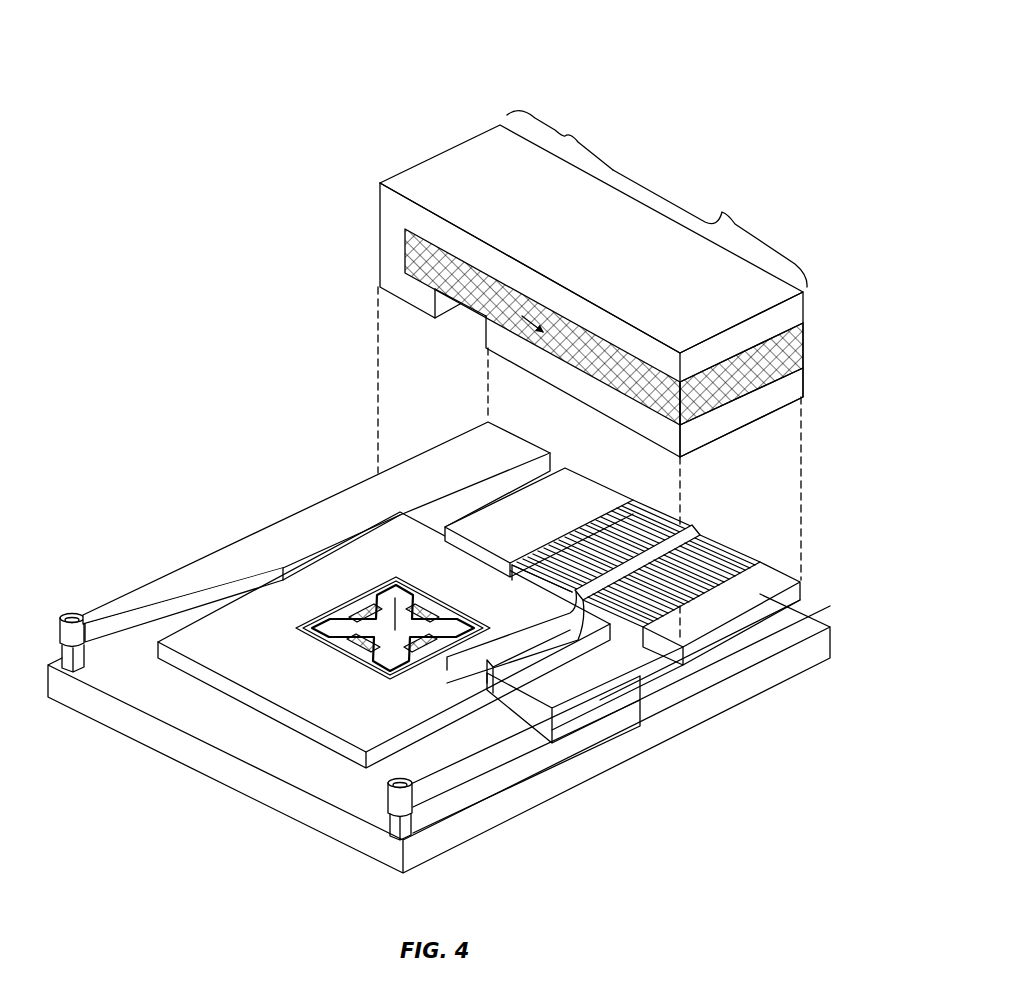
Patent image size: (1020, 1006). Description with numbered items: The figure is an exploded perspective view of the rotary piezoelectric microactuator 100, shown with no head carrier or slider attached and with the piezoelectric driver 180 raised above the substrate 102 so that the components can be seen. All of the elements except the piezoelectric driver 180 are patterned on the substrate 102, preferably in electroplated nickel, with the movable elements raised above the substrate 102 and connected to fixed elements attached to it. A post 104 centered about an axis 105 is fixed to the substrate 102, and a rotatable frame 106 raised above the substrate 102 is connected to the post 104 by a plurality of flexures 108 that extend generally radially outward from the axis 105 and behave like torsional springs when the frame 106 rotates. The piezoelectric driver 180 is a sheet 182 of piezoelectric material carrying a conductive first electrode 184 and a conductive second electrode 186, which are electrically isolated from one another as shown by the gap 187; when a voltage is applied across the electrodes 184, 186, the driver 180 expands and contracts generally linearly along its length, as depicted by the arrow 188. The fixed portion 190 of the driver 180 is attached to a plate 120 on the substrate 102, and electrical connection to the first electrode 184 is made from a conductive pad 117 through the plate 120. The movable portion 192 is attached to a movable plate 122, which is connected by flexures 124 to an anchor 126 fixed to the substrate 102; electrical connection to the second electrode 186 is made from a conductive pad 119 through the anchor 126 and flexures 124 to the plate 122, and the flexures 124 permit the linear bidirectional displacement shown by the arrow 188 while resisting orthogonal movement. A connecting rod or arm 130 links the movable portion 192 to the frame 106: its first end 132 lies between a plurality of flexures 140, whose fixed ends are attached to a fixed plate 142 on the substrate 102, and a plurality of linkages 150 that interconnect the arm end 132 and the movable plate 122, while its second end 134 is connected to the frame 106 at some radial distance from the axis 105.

The rotary piezoelectric microactuator 100 is at (115, 55).
The substrate 102 is at (120, 720).
The post 104 is at (390, 637).
The axis 105 is at (390, 597).
The rotatable frame 106 is at (228, 683).
The flexures 108 is at (437, 597).
The conductive pad 117 is at (70, 615).
The conductive pad 119 is at (405, 800).
The plate 120 is at (458, 452).
The movable plate 122 is at (792, 565).
The flexures 124 is at (647, 637).
The anchor 126 is at (572, 685).
The connecting rod or arm 130 is at (537, 623).
The first end of arm 132 is at (689, 532).
The second end of arm 134 is at (487, 678).
The flexures 140 is at (640, 545).
The fixed plate 142 is at (585, 482).
The linkages 150 is at (780, 580).
The piezoelectric driver 180 is at (420, 140).
The piezoelectric sheet 182 is at (806, 355).
The first electrode 184 is at (388, 288).
The second electrode 186 is at (806, 390).
The gap 187 is at (462, 325).
The arrow 188 is at (626, 376).
The fixed portion 190 is at (560, 140).
The movable portion 192 is at (710, 228).